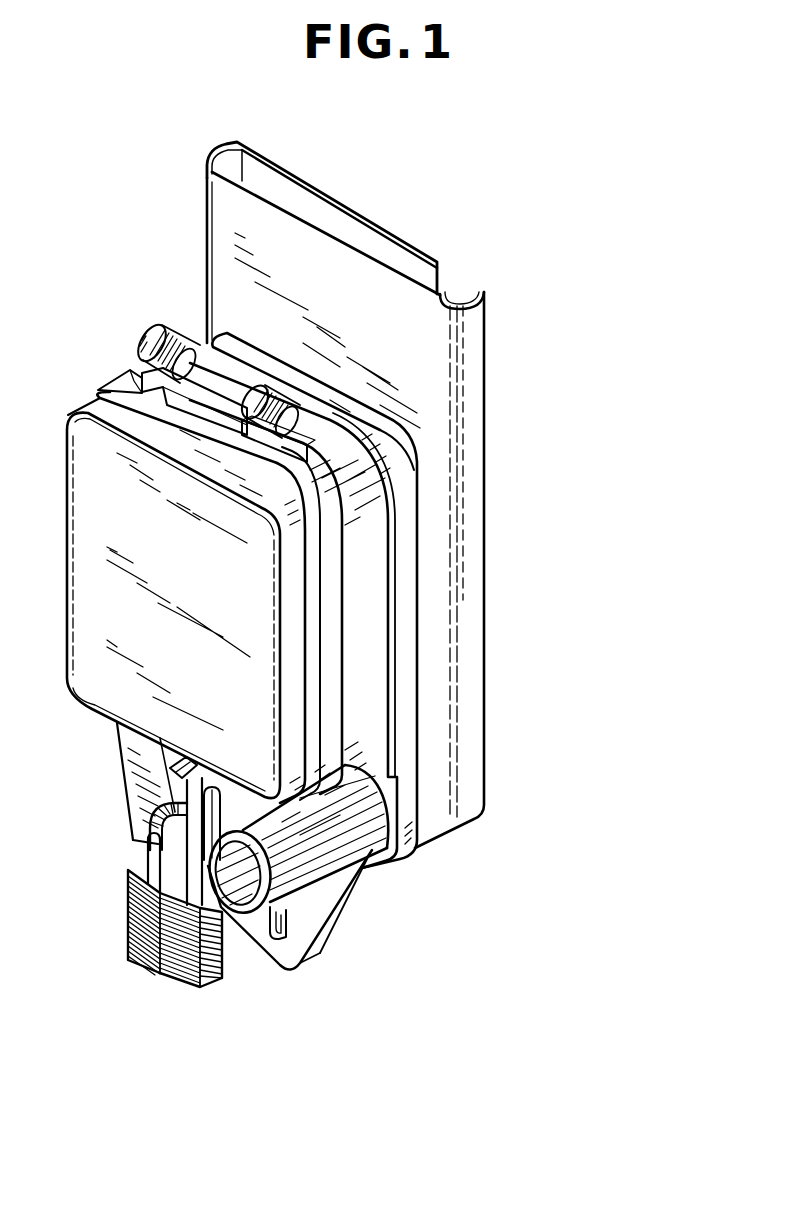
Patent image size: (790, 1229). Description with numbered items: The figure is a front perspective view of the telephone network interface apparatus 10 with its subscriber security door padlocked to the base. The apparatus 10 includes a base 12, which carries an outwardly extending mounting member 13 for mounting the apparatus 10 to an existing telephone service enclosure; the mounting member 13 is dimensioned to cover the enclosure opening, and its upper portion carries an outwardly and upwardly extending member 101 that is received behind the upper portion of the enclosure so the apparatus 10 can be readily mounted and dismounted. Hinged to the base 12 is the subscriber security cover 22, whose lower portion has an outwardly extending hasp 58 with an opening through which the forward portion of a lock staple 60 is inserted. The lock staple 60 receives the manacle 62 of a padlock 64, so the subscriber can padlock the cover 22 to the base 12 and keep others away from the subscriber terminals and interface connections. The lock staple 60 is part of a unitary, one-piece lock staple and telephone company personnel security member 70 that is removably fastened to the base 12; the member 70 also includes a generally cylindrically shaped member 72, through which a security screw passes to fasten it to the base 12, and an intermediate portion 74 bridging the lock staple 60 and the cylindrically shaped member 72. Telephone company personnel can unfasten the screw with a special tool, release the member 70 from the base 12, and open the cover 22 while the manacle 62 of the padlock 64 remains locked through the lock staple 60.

The telephone network interface apparatus 10 is at (86, 341).
The base 12 is at (360, 617).
The outwardly extending mounting member 13 is at (476, 386).
The subscriber security cover 22 is at (186, 588).
The hasp 58 is at (123, 777).
The lock staple 60 is at (173, 813).
The manacle 62 is at (140, 857).
The padlock 64 is at (150, 962).
The unitary lock staple and telephone company personnel security member 70 is at (303, 852).
The cylindrically shaped member 72 is at (332, 926).
The intermediate portion 74 is at (278, 905).
The outwardly and upwardly extending member 101 is at (401, 238).